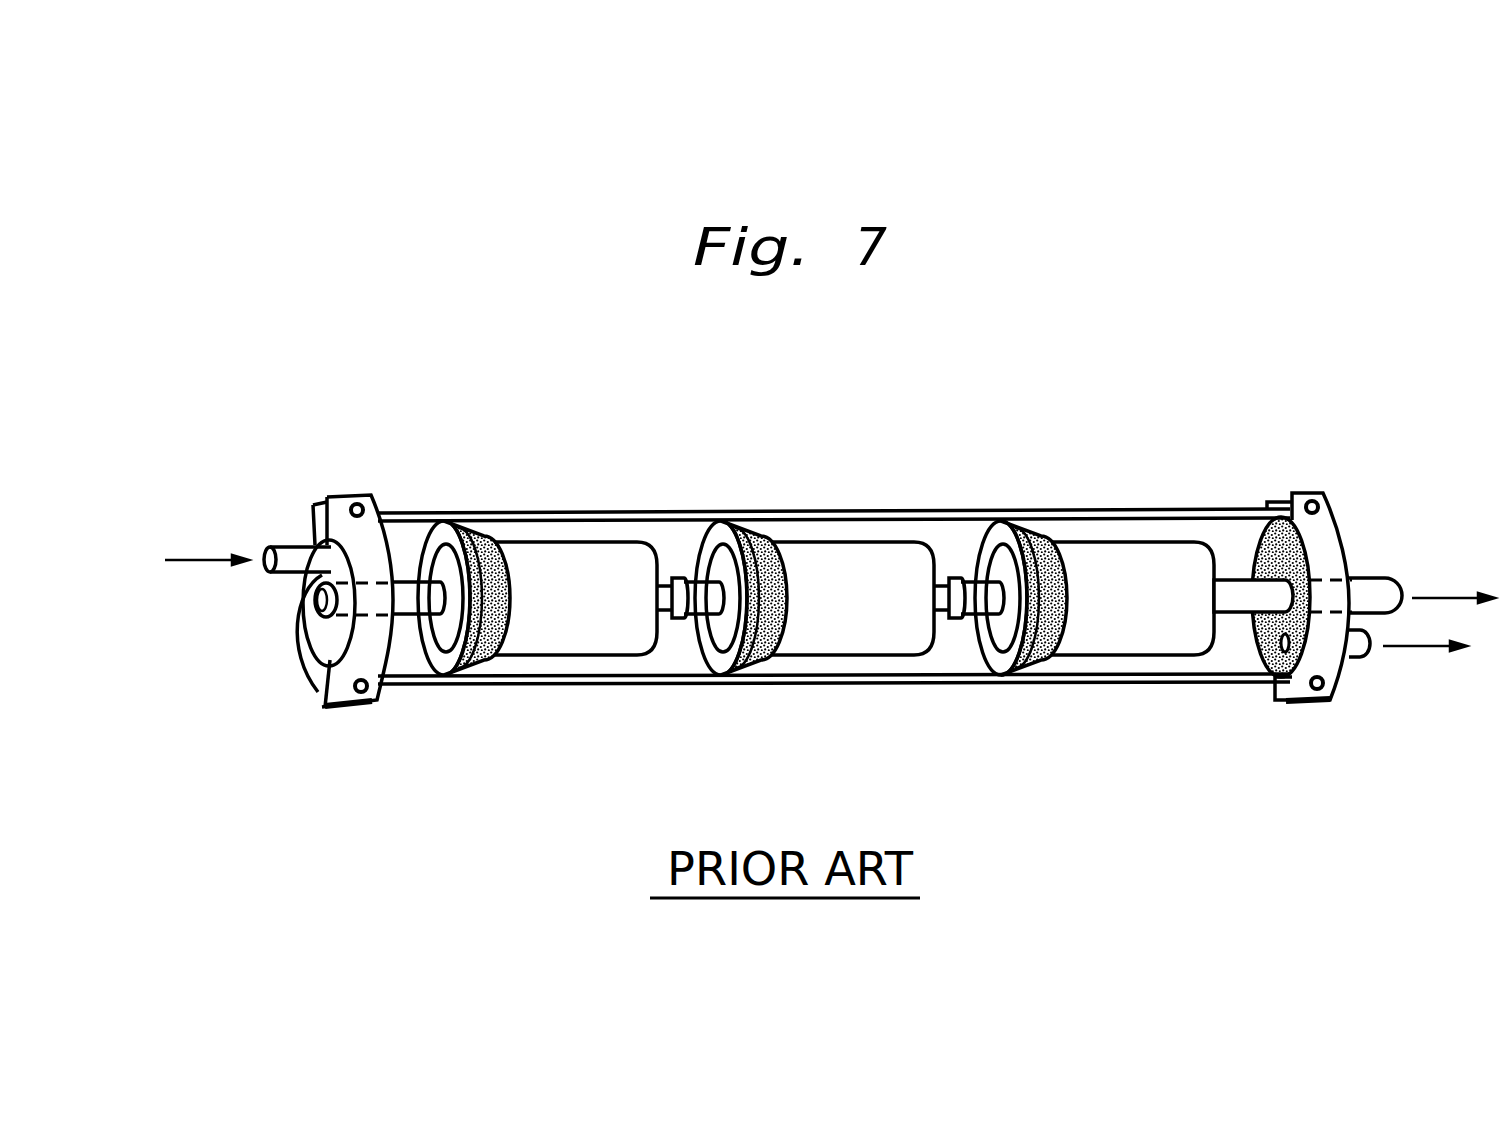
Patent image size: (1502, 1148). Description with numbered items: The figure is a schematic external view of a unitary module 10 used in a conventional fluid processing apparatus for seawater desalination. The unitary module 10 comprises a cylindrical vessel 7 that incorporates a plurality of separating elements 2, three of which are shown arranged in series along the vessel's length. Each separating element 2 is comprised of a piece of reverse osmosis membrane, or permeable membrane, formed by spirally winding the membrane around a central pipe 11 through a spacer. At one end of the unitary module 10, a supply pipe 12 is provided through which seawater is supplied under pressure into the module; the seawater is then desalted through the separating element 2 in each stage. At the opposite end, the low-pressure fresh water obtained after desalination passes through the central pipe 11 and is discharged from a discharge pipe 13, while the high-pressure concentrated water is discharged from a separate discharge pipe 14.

The unitary module 10 is at (744, 507).
The housing 7 is at (908, 684).
The separating element 2 is at (616, 642).
The central pipe 11 is at (408, 593).
The supply pipe 12 is at (287, 555).
The discharge pipe 13 is at (1367, 592).
The discharge pipe 14 is at (1358, 645).